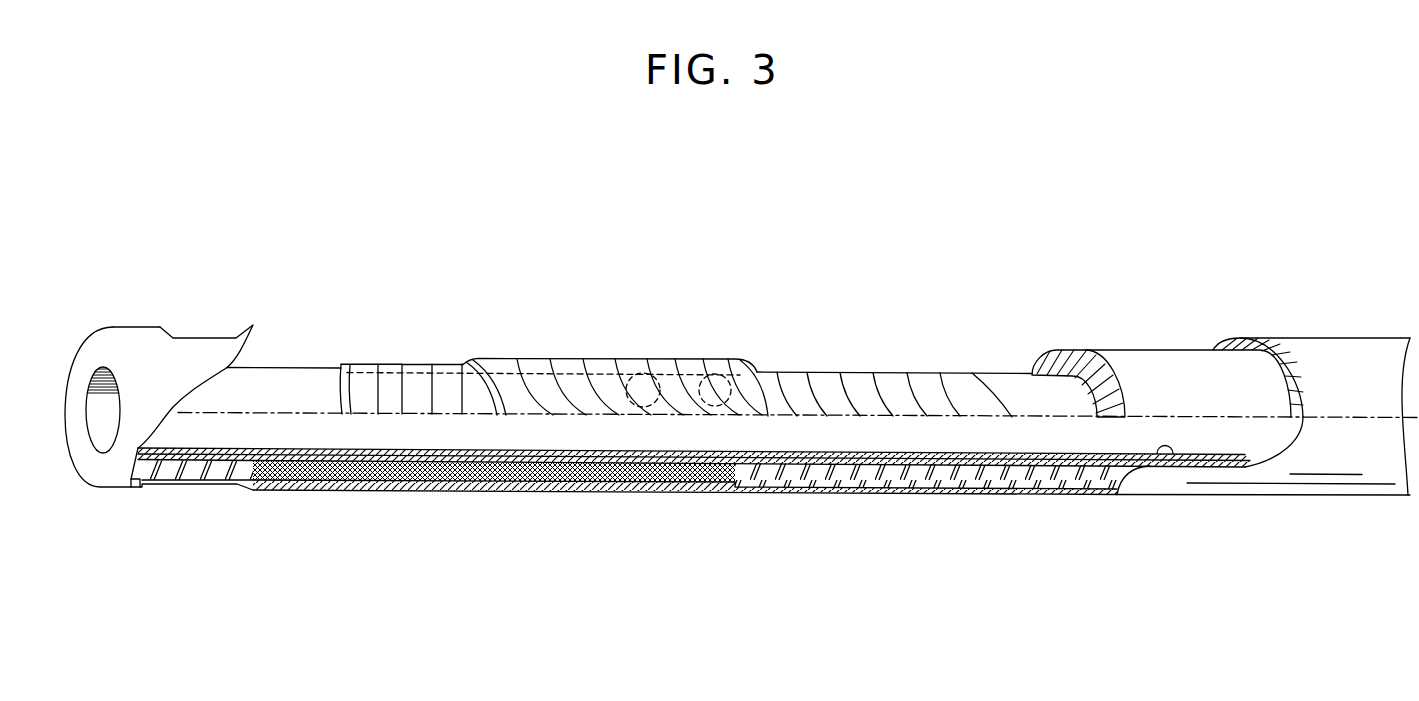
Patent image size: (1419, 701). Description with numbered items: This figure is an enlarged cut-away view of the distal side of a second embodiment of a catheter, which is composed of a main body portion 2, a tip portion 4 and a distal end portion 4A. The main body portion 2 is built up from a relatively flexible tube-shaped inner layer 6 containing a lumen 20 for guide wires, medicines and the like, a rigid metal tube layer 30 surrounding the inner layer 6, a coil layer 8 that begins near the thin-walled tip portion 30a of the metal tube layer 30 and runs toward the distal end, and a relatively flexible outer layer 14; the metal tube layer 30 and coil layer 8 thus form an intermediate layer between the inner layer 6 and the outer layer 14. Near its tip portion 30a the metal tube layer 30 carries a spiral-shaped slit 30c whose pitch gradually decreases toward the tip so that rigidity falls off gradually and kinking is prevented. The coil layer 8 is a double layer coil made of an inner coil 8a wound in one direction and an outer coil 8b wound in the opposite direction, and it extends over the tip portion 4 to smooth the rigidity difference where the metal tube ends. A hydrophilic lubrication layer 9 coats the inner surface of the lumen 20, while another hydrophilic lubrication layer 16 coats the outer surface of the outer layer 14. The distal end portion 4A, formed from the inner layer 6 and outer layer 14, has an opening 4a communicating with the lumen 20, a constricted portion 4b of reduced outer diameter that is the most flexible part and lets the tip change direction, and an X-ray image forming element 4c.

The main body portion 2 is at (1273, 513).
The tip portion 4 is at (278, 407).
The opening 4a is at (97, 405).
The constricted portion 4b is at (200, 337).
The X-ray image forming element 4c is at (135, 484).
The distal end portion 4A is at (175, 485).
The inner layer 6 is at (300, 453).
The coil layer 8 is at (510, 430).
The inner coil 8a is at (393, 362).
The outer coil 8b is at (398, 293).
The hydrophilic lubrication layer 9 is at (1174, 456).
The outer layer 14 is at (1122, 348).
The hydrophilic lubrication layer 16 is at (1348, 336).
The lumen 20 is at (352, 428).
The metal tube layer 30 is at (926, 435).
The tip portion of the metal tube layer 30a is at (687, 362).
The spiral-shaped slit 30c is at (973, 373).